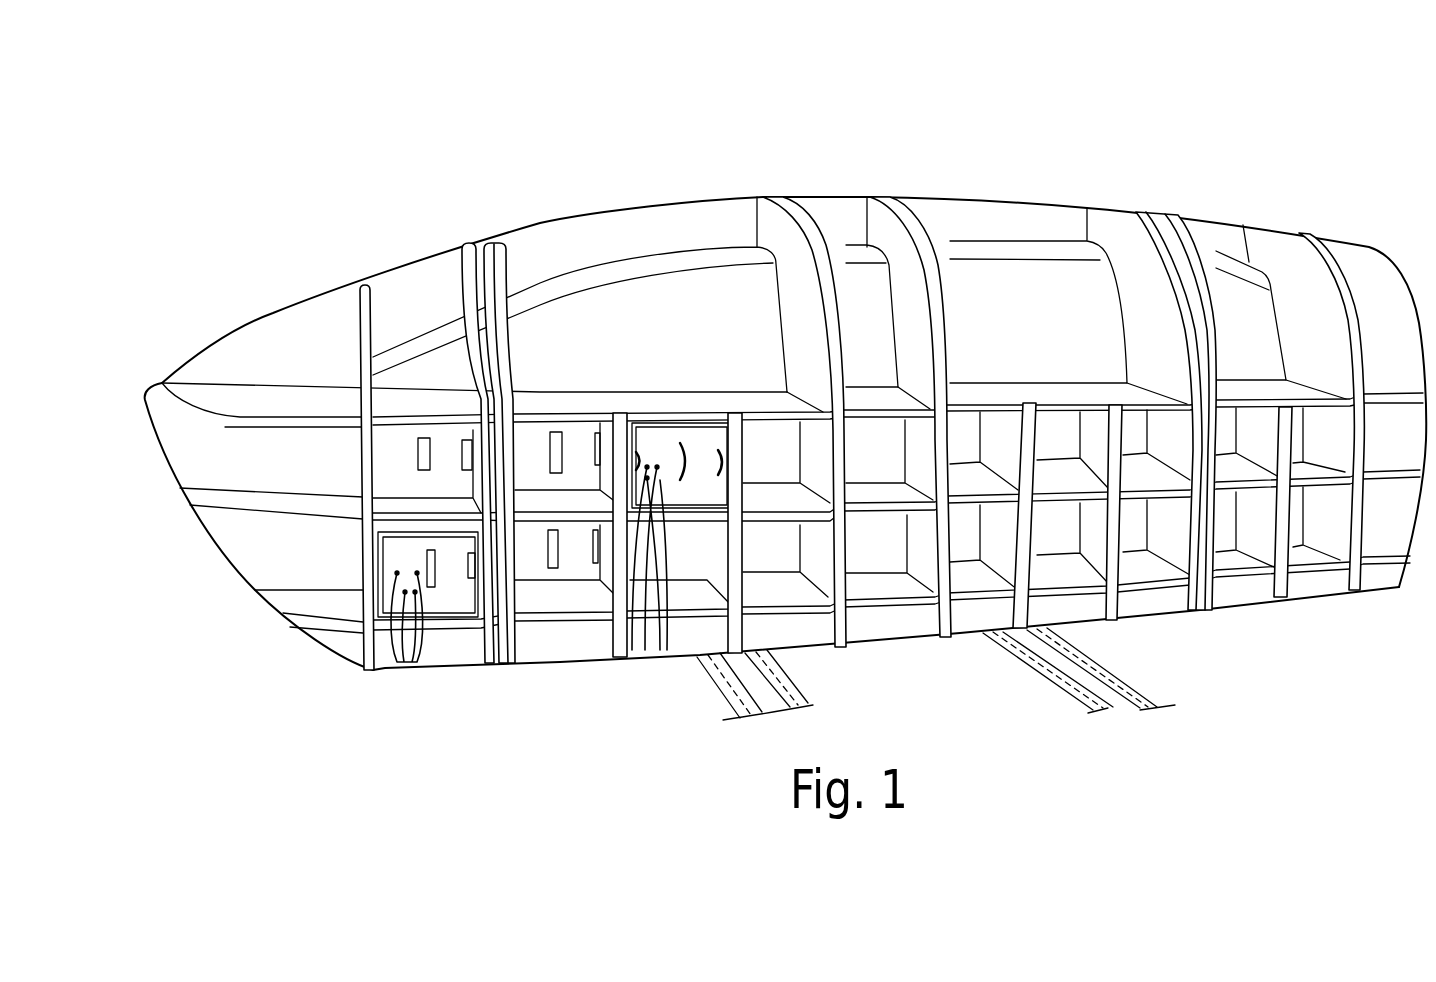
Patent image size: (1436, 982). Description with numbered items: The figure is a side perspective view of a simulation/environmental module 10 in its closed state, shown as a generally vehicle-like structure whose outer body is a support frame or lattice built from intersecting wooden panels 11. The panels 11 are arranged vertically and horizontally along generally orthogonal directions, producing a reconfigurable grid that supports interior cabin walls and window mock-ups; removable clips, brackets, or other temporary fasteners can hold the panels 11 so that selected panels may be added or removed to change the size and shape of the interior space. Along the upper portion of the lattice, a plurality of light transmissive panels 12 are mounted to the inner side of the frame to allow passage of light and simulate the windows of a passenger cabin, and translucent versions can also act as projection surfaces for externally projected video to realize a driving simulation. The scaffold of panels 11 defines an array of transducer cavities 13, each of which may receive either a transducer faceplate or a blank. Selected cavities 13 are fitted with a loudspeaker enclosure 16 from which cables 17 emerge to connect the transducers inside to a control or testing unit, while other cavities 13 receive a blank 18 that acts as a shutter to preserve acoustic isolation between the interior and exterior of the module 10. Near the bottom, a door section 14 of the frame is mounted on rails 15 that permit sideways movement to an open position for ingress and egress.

The simulation/environmental module 10 is at (990, 132).
The wooden panels 11 is at (417, 300).
The light transmissive panels 12 is at (683, 318).
The transducer cavities 13 is at (687, 603).
The door section 14 is at (883, 652).
The rails 15 is at (722, 690).
The loudspeaker enclosure 16 is at (703, 442).
The cables 17 is at (427, 640).
The blank 18 is at (572, 542).